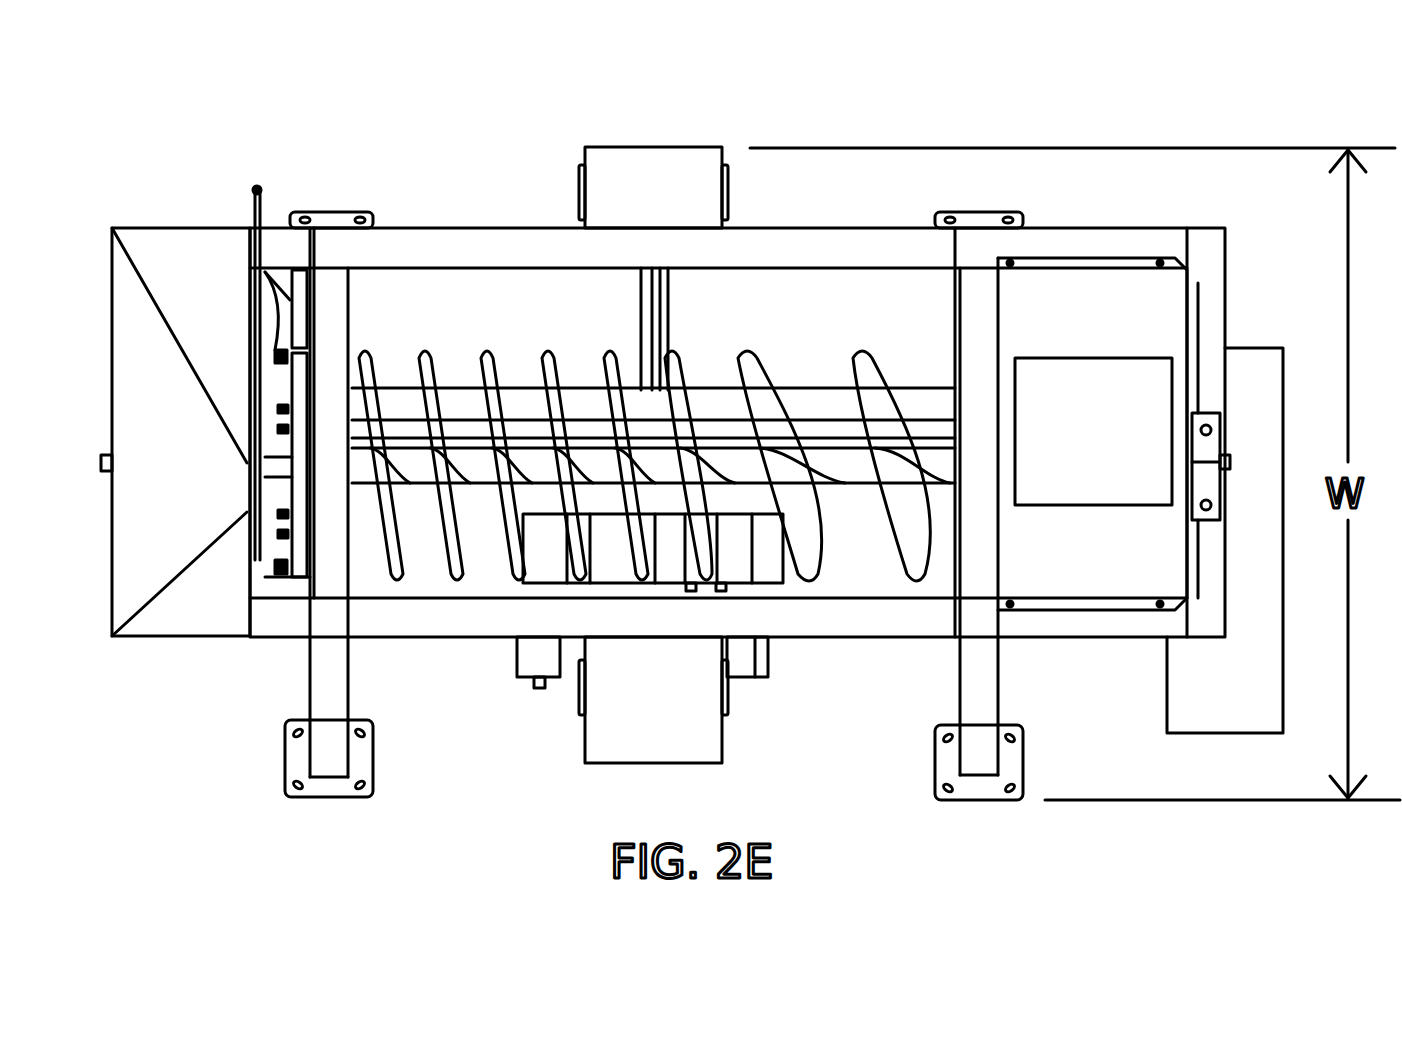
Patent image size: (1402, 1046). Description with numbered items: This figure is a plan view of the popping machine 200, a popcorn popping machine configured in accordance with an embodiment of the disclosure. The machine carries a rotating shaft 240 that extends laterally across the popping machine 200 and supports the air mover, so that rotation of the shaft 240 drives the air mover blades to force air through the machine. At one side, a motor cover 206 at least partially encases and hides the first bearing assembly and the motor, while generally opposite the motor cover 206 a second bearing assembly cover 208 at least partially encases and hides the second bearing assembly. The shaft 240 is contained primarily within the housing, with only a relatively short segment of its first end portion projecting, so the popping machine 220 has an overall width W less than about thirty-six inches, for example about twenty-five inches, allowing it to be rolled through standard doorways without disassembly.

The popping machine 200 is at (143, 165).
The motor cover 206 is at (617, 742).
The second bearing assembly cover 208 is at (632, 175).
The popping machine 220 is at (445, 320).
The shaft 240 is at (666, 322).